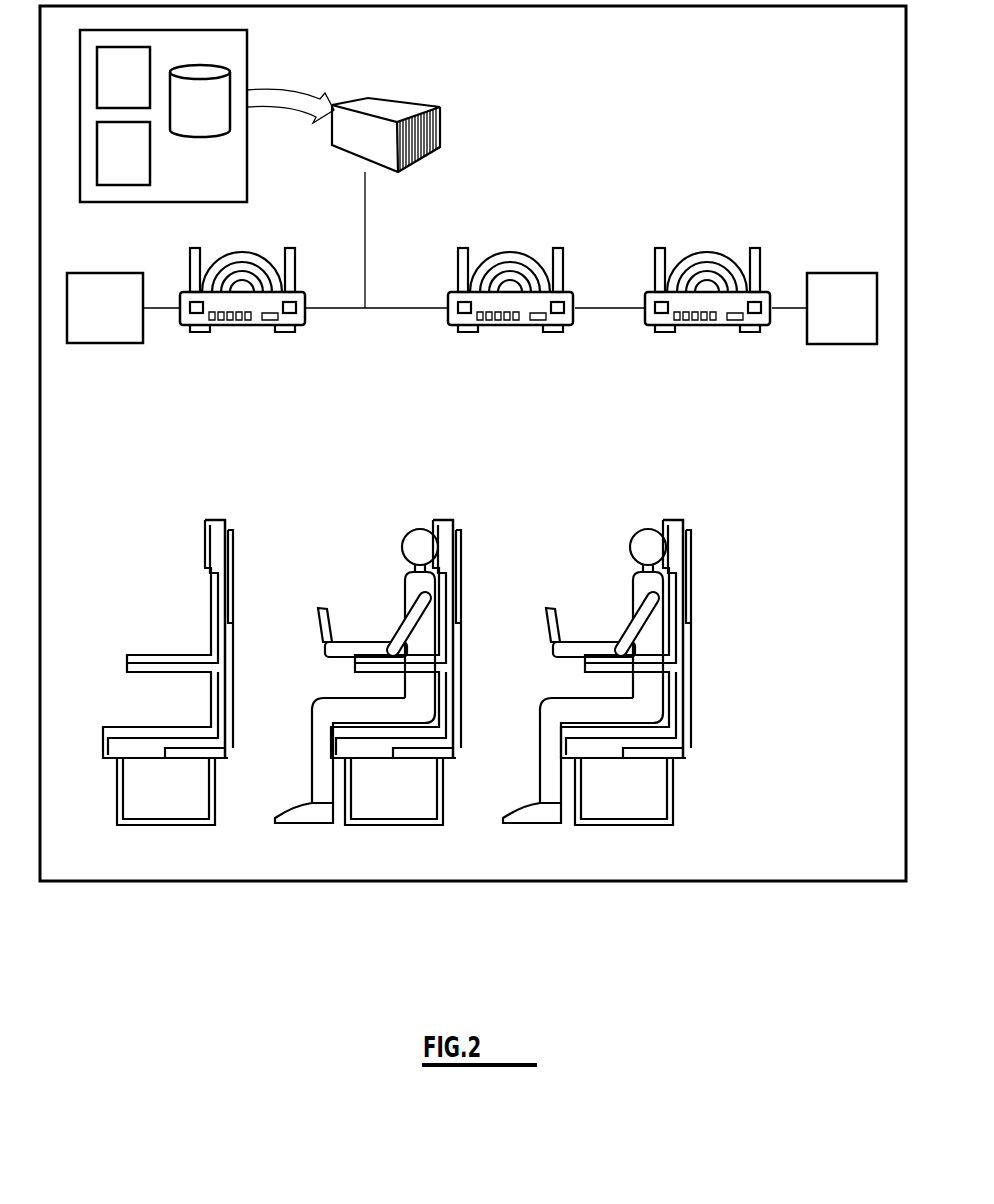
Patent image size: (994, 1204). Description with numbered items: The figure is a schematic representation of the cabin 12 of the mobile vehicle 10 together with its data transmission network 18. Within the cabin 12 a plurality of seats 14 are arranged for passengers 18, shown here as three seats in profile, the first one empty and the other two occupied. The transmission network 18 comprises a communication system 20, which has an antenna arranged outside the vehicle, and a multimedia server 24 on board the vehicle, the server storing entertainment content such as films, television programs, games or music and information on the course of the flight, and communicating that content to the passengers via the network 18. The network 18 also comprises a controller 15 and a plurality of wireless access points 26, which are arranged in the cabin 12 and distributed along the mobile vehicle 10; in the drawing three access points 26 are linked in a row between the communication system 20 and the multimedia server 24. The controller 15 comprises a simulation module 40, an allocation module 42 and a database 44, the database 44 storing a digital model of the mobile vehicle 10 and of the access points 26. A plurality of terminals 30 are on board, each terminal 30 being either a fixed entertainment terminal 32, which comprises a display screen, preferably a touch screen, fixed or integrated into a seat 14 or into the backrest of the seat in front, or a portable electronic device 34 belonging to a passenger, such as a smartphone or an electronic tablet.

The mobile vehicle 10 is at (783, 883).
The cabin 12 is at (140, 550).
The seat 14 is at (237, 503).
The controller 15 is at (272, 142).
The data transmission network 18 is at (578, 152).
The communication system 20 is at (119, 325).
The multimedia server 24 is at (855, 323).
The wireless access point 26 is at (240, 328).
The terminal 30 is at (495, 622).
The fixed entertainment terminal 32 is at (237, 548).
The portable electronic device 34 is at (325, 608).
The simulation module 40 is at (137, 95).
The allocation module 42 is at (137, 170).
The database 44 is at (213, 120).